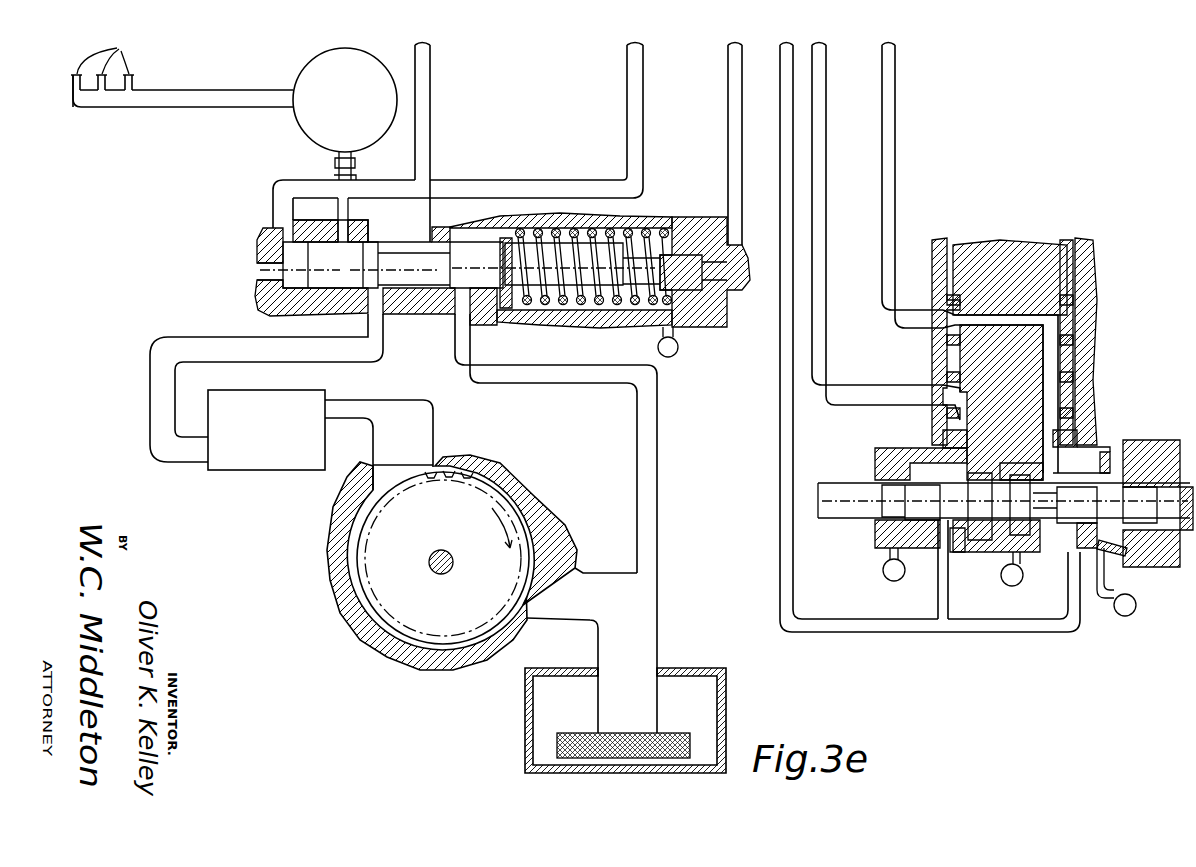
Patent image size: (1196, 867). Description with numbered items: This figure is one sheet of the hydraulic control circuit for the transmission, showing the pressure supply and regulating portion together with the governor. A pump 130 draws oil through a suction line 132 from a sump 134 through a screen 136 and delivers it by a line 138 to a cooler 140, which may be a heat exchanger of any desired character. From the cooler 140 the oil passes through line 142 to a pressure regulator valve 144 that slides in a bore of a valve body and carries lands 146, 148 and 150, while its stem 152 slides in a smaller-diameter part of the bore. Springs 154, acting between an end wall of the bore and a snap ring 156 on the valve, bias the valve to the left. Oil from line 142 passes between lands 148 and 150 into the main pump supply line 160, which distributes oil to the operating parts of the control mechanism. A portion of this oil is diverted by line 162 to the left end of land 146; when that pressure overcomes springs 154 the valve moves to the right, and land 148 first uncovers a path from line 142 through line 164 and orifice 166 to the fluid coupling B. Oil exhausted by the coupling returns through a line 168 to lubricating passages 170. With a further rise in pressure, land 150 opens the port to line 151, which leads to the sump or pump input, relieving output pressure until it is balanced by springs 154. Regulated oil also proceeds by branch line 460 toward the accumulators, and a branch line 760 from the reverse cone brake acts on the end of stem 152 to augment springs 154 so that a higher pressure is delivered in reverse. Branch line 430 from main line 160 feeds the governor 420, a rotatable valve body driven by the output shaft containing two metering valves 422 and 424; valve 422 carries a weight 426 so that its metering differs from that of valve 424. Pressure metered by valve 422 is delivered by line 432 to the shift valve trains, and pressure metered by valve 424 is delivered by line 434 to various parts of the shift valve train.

The pump 130 is at (323, 576).
The suction line 132 is at (602, 575).
The sump 134 is at (718, 705).
The screen 136 is at (668, 735).
The line 138 is at (420, 428).
The cooler 140 is at (282, 468).
The line 142 is at (348, 357).
The pressure regulator valve 144 is at (404, 245).
The land 146 is at (262, 292).
The land 148 is at (378, 273).
The land 150 is at (478, 253).
The line 151 is at (525, 372).
The stem 152 is at (682, 255).
The springs 154 is at (654, 225).
The snap ring 156 is at (505, 300).
The main pump supply line 160 is at (627, 60).
The line 162 is at (313, 192).
The line 164 is at (346, 216).
The orifice 166 is at (350, 160).
The line 168 is at (205, 95).
The lubricating passages 170 is at (110, 70).
The governor 420 is at (1106, 389).
The metering valve 422 is at (1118, 482).
The metering valve 424 is at (957, 512).
The weight 426 is at (1148, 567).
The branch line 430 is at (780, 68).
The line 432 is at (896, 62).
The line 434 is at (826, 62).
The branch line 460 is at (432, 68).
The branch line 760 is at (728, 68).
The fluid coupling B is at (374, 50).